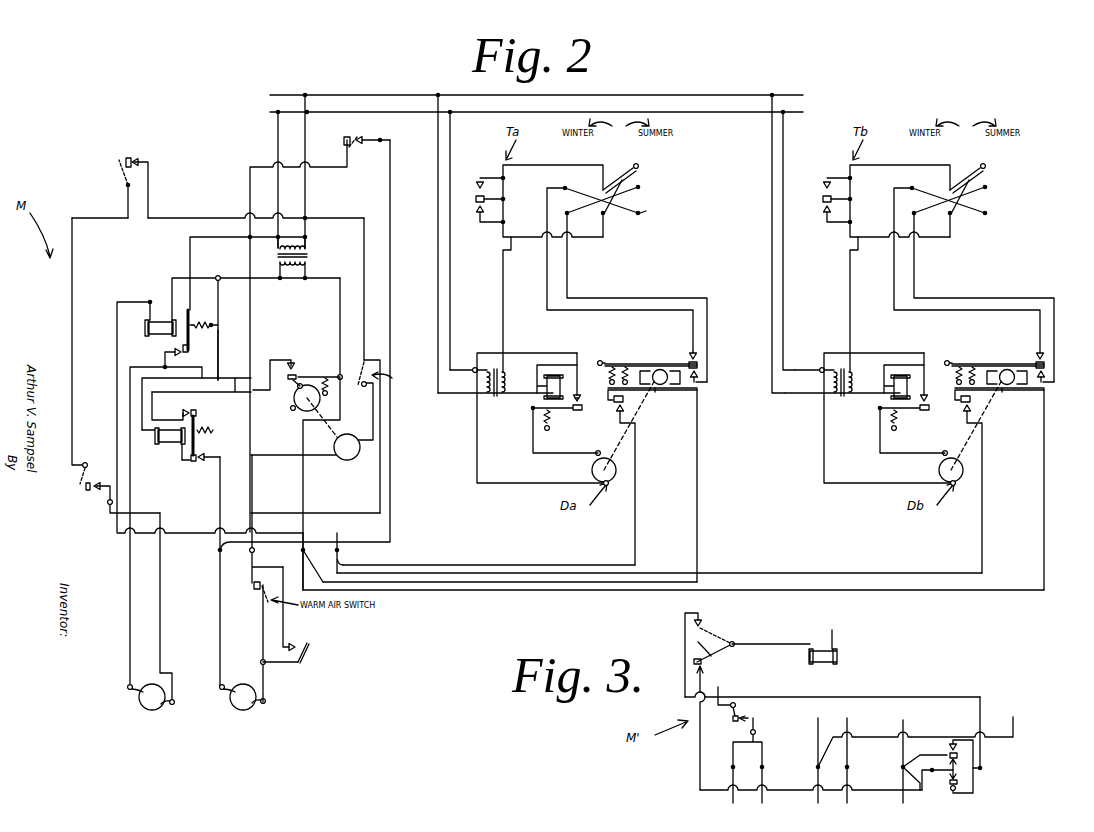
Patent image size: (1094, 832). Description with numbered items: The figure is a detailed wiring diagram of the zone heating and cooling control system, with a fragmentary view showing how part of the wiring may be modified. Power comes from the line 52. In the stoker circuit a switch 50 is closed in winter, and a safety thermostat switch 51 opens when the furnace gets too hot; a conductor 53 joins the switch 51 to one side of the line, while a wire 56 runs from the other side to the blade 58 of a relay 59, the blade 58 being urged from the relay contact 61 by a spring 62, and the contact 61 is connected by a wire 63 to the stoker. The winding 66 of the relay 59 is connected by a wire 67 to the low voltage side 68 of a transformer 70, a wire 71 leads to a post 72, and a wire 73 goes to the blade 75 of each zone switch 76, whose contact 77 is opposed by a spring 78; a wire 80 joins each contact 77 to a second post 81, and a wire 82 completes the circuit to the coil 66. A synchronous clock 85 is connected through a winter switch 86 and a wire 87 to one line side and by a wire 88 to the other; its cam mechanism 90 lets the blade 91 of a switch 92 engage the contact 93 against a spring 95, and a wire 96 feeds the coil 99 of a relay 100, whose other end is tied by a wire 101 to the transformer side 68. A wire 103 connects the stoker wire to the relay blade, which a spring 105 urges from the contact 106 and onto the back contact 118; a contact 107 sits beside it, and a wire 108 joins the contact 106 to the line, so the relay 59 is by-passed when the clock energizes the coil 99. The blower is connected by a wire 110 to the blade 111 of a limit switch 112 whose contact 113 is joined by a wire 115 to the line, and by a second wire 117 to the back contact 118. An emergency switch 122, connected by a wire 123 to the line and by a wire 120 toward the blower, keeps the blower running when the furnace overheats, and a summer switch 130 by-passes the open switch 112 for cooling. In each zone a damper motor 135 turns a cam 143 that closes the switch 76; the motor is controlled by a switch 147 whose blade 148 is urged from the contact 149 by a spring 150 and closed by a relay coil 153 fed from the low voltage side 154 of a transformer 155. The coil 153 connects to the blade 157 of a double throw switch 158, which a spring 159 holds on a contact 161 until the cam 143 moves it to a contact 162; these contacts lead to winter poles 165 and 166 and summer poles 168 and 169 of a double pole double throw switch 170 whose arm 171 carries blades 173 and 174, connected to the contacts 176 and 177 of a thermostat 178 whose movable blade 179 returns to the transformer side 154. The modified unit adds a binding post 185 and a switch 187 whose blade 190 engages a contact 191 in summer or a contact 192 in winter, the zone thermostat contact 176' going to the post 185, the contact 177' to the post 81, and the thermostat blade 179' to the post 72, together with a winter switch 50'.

In FIG. 2, the switch 50 is at (106, 382).
In FIG. 2, the safety or limit control thermostat switch 51 is at (143, 156).
In FIG. 2, the power supply lines 52 is at (261, 107).
In FIG. 2, the conductor 53 is at (205, 217).
In FIG. 2, the wire 56 is at (232, 237).
In FIG. 2, the blade 58 is at (190, 340).
In FIG. 2, the relay 59 is at (152, 345).
In FIG. 2, the relay contact 61 is at (160, 357).
In FIG. 2, the spring 62 is at (206, 322).
In FIG. 2, the wire 63 is at (128, 608).
In FIG. 2, the winding 66 is at (163, 320).
In FIG. 3, the winding 66 is at (819, 664).
In FIG. 2, the wire 67 is at (214, 276).
In FIG. 2, the low voltage side 68 is at (294, 280).
In FIG. 2, the transformer 70 is at (319, 260).
In FIG. 2, the wire 71 is at (338, 318).
In FIG. 2, the post 72 is at (301, 553).
In FIG. 3, the post 72 is at (902, 764).
In FIG. 2, the wire 73 is at (484, 584).
In FIG. 2, the blade 75 is at (658, 392).
In FIG. 2, the switch 76 is at (617, 418).
In FIG. 2, the contact 77 is at (623, 404).
In FIG. 2, the spring 78 is at (607, 390).
In FIG. 2, the wire 80 is at (534, 572).
In FIG. 2, the second post 81 is at (339, 551).
In FIG. 3, the second post 81 is at (952, 786).
In FIG. 2, the wire 82 is at (200, 532).
In FIG. 2, the synchronous clock 85 is at (347, 460).
In FIG. 2, the switch 86 is at (360, 393).
In FIG. 2, the wire 87 is at (364, 318).
In FIG. 2, the wire 88 is at (295, 456).
In FIG. 2, the cam mechanism 90 is at (290, 411).
In FIG. 2, the blade 91 is at (296, 392).
In FIG. 2, the switch 92 is at (307, 374).
In FIG. 2, the contact 93 is at (292, 362).
In FIG. 2, the spring 95 is at (328, 388).
In FIG. 2, the wire 96 is at (268, 368).
In FIG. 2, the coil 99 is at (163, 445).
In FIG. 2, the relay 100 is at (187, 465).
In FIG. 2, the wire 101 is at (219, 334).
In FIG. 2, the wire 103 is at (194, 358).
In FIG. 2, the spring 105 is at (214, 430).
In FIG. 2, the contact 106 is at (174, 410).
In FIG. 2, the contact 107 is at (198, 412).
In FIG. 2, the wire 108 is at (236, 390).
In FIG. 2, the wire 110 is at (262, 678).
In FIG. 2, the blade 111 is at (262, 603).
In FIG. 2, the limit control switch 112 is at (254, 596).
In FIG. 2, the contact 113 is at (251, 585).
In FIG. 2, the wire 115 is at (283, 512).
In FIG. 2, the second wire 117 is at (218, 648).
In FIG. 2, the back contact 118 is at (205, 452).
In FIG. 2, the conductor 120 is at (390, 310).
In FIG. 2, the blower limit or emergency switch 122 is at (368, 141).
In FIG. 2, the wire 123 is at (249, 195).
In FIG. 2, the switch 130 is at (311, 651).
In FIG. 2, the damper motor 135 is at (592, 471).
In FIG. 2, the cam 143 is at (668, 385).
In FIG. 2, the switch 147 is at (572, 394).
In FIG. 2, the blade 148 is at (578, 412).
In FIG. 2, the contact 149 is at (591, 383).
In FIG. 2, the spring 150 is at (547, 432).
In FIG. 2, the relay coil 153 is at (546, 387).
In FIG. 2, the low voltage side 154 is at (503, 395).
In FIG. 2, the transformer 155 is at (486, 410).
In FIG. 2, the blade 157 is at (627, 365).
In FIG. 2, the single pole double throw switch 158 is at (688, 351).
In FIG. 2, the spring 159 is at (612, 366).
In FIG. 2, the contact 161 is at (705, 384).
In FIG. 2, the contact 162 is at (693, 352).
In FIG. 2, the winter pole 165 is at (570, 216).
In FIG. 2, the winter pole 166 is at (572, 180).
In FIG. 2, the summer pole 168 is at (640, 185).
In FIG. 2, the summer pole 169 is at (641, 214).
In FIG. 2, the double pole double throw switch 170 is at (654, 213).
In FIG. 2, the arm 171 is at (640, 165).
In FIG. 2, the blade 173 is at (605, 186).
In FIG. 2, the blade 174 is at (606, 216).
In FIG. 2, the contact 176 is at (534, 170).
In FIG. 2, the contact 177 is at (483, 229).
In FIG. 2, the single pole double throw thermostat 178 is at (472, 206).
In FIG. 2, the movable blade 179 is at (509, 274).
In FIG. 3, the switch 50' is at (736, 745).
In FIG. 3, the contact 176' is at (984, 758).
In FIG. 3, the contact 177' is at (982, 749).
In FIG. 3, the thermostat blade 179' is at (931, 760).
In FIG. 3, the additional binding post 185 is at (984, 768).
In FIG. 3, the single pole double throw switch 187 is at (718, 667).
In FIG. 3, the blade 190 is at (697, 644).
In FIG. 3, the contact 191 is at (701, 621).
In FIG. 3, the contact 192 is at (703, 680).